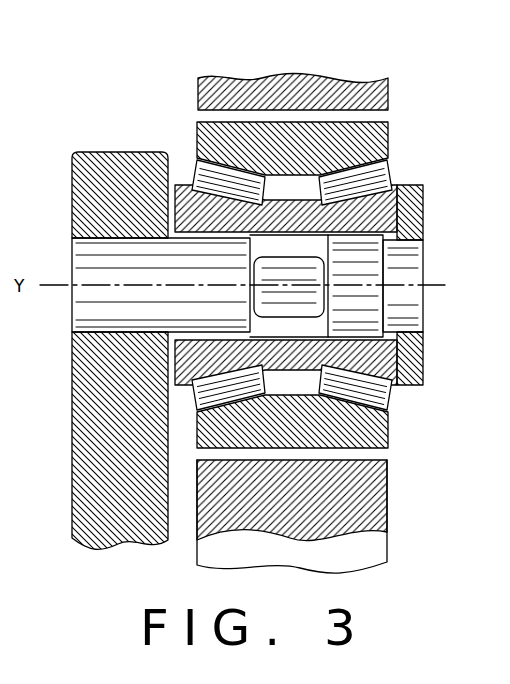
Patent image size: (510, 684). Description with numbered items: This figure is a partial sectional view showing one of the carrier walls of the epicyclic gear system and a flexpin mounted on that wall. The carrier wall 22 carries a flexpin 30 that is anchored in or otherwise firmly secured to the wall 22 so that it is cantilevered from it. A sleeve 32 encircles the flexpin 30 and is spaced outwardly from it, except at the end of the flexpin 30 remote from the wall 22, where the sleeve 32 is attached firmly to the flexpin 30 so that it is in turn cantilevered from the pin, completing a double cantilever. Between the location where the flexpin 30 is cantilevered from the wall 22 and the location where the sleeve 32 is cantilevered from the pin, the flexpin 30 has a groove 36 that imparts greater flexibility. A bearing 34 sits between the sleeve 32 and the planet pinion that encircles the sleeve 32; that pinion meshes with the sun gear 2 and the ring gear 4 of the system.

The sun gear 2 is at (328, 552).
The ring gear 4 is at (343, 78).
The carrier wall 22 is at (96, 184).
The flexpin 30 is at (72, 303).
The sleeve 32 is at (413, 252).
The bearing 34 is at (406, 172).
The groove 36 is at (282, 243).